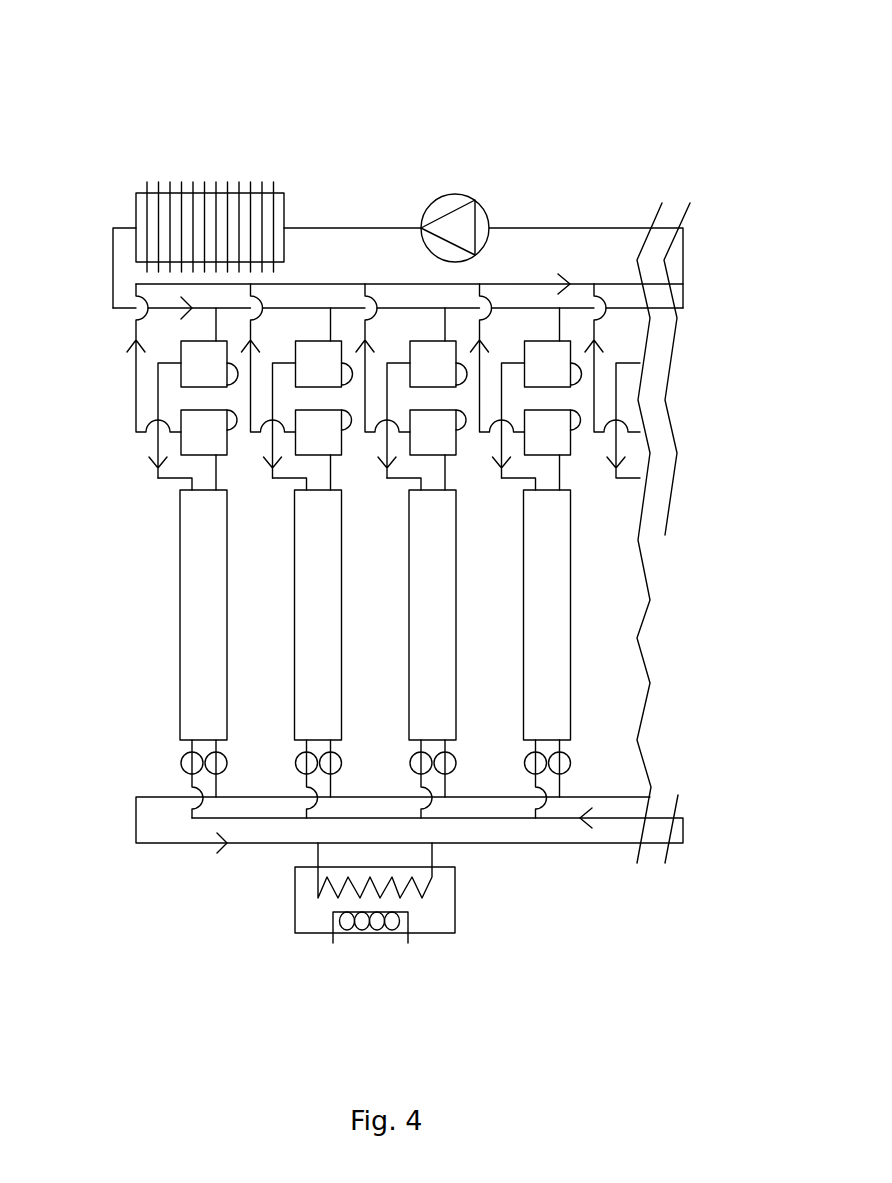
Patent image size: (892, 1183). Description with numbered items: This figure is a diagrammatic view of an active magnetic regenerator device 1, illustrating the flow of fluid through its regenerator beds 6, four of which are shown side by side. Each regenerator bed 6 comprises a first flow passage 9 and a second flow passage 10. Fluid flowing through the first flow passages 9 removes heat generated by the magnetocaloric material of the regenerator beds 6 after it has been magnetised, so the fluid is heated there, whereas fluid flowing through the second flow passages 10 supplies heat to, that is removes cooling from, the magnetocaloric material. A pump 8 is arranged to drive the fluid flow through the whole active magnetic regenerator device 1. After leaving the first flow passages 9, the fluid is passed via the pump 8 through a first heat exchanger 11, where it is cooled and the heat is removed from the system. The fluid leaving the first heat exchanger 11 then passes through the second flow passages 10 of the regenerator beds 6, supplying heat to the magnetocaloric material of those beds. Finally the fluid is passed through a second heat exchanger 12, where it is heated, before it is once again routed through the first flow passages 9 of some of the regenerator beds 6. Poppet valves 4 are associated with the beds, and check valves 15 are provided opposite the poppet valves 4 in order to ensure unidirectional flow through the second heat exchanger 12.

The active magnetic regenerator device 1 is at (672, 105).
The poppet valve 4 is at (541, 436).
The regenerator bed 6 is at (215, 627).
The pump 8 is at (445, 208).
The first flow passage 9 is at (214, 465).
The second flow passage 10 is at (177, 478).
The first heat exchanger 11 is at (207, 207).
The second heat exchanger 12 is at (423, 917).
The check valve 15 is at (328, 764).